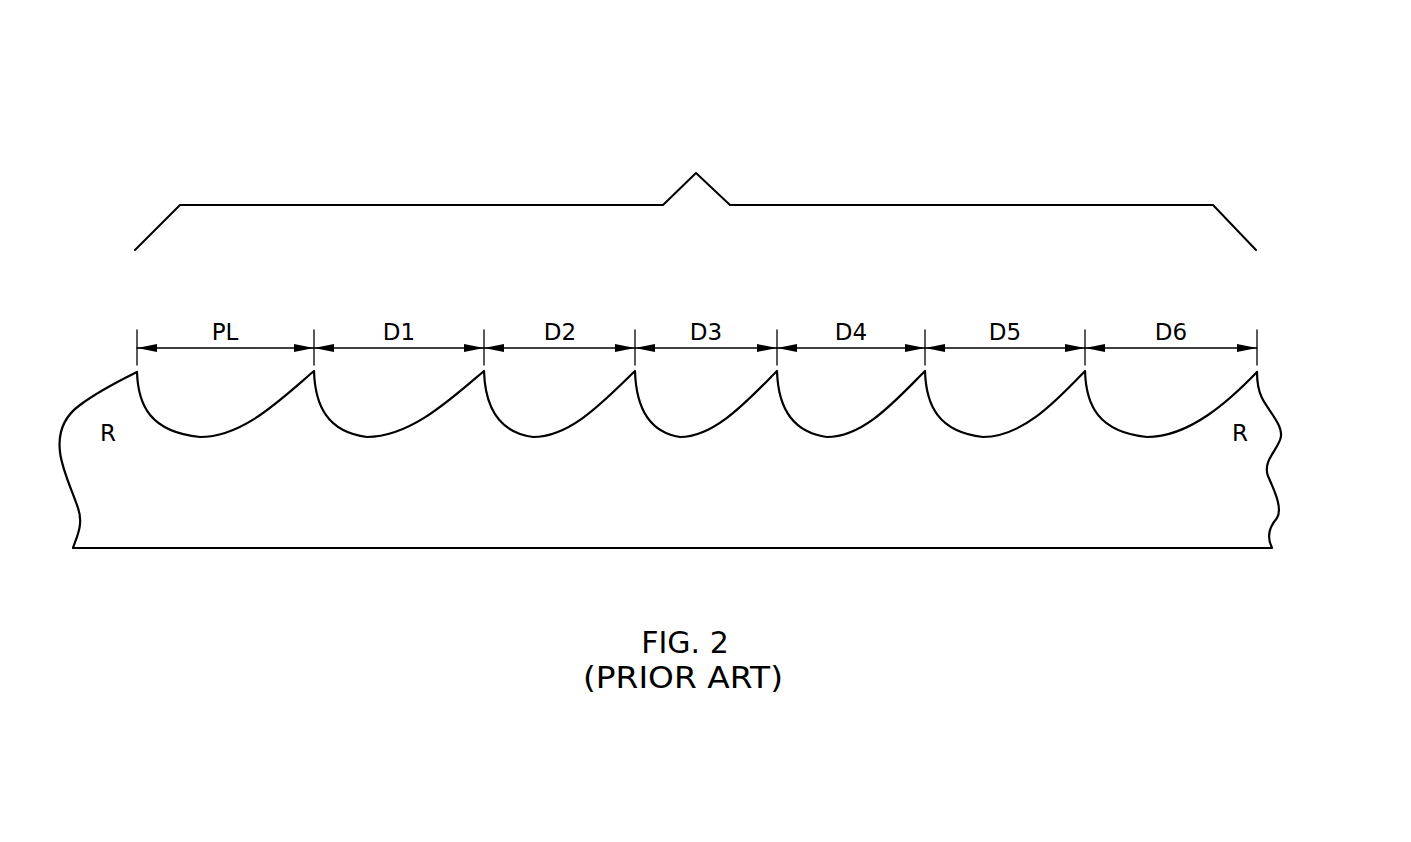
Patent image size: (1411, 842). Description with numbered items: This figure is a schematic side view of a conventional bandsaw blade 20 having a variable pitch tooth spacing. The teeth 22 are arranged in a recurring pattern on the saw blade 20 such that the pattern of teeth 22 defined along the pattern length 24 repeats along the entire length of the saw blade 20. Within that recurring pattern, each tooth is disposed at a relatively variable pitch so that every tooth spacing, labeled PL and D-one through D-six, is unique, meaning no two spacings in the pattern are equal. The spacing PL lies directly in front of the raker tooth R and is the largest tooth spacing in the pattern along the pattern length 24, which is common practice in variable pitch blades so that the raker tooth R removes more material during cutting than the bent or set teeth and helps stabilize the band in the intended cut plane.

The bandsaw blade 20 is at (667, 500).
The teeth 22 is at (1297, 114).
The pattern length 24 is at (695, 196).